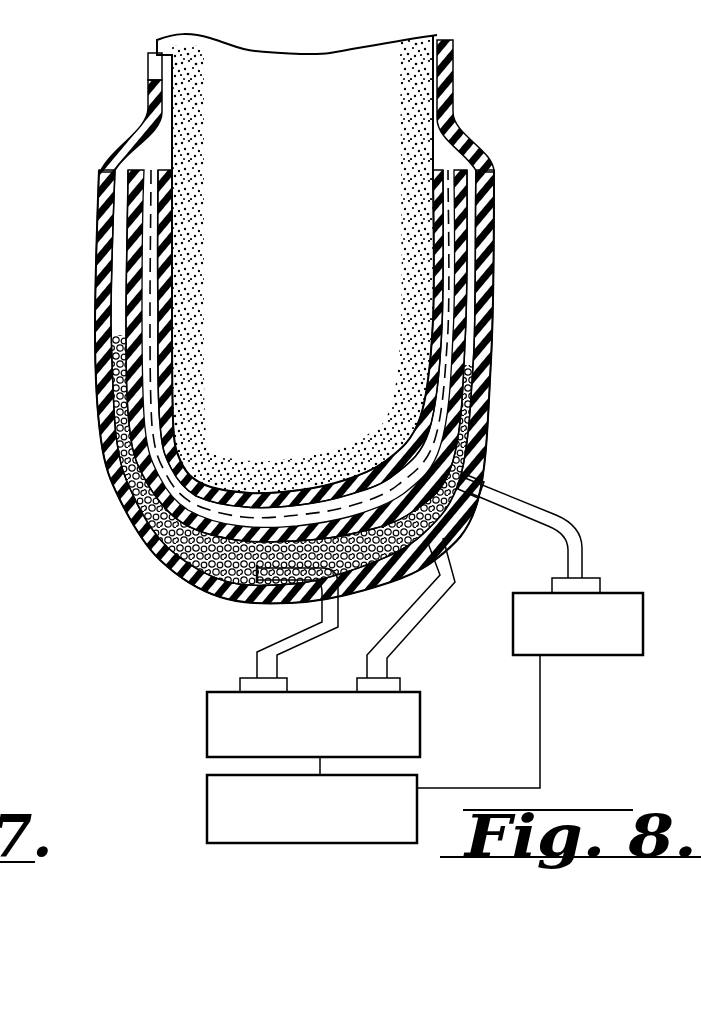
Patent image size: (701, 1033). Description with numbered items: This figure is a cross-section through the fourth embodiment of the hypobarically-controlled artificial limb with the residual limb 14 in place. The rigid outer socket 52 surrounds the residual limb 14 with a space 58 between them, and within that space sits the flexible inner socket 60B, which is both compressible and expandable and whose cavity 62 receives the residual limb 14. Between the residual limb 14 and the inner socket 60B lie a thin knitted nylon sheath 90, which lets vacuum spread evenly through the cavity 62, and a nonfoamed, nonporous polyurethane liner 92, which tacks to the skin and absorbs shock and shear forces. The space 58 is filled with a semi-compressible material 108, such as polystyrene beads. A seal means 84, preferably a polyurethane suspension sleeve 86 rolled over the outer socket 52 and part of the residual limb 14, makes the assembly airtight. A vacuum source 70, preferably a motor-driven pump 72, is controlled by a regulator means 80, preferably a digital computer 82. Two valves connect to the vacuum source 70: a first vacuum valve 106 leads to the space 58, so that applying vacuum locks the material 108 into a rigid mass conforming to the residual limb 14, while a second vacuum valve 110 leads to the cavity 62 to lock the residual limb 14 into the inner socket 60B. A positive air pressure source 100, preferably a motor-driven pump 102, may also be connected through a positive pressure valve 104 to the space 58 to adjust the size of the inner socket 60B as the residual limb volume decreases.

The residual limb 14 is at (225, 88).
The outer socket 52 is at (487, 457).
The space 58 is at (490, 427).
The inner socket 60B is at (300, 378).
The cavity 62 is at (140, 262).
The vacuum source 70 is at (242, 717).
The motor-driven pump 72 is at (233, 718).
The regulator means 80 is at (245, 793).
The digital computer 82 is at (207, 800).
The seal means 84 is at (360, 106).
The suspension sleeve 86 is at (473, 140).
The sheath 90 is at (490, 252).
The liner 92 is at (440, 318).
The positive air pressure source 100 is at (558, 683).
The motor-driven pump 102 is at (570, 657).
The positive pressure valve 104 is at (490, 474).
The first vacuum valve 106 is at (447, 550).
The semi-compressible material 108 is at (150, 548).
The second vacuum valve 110 is at (307, 613).